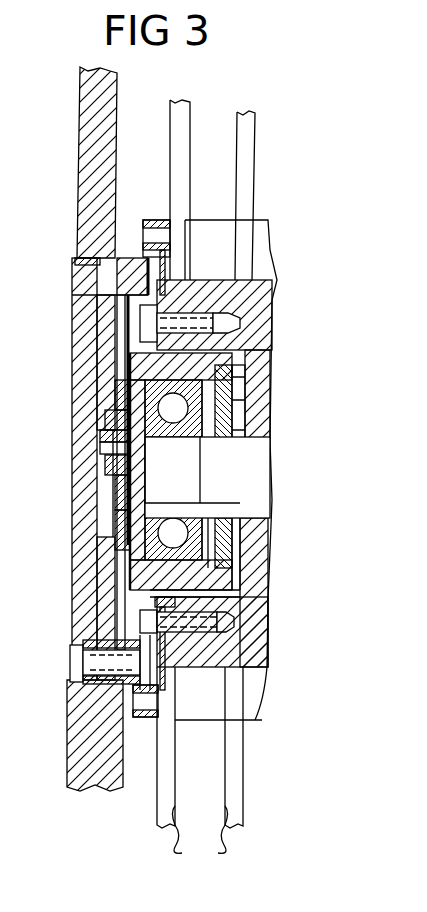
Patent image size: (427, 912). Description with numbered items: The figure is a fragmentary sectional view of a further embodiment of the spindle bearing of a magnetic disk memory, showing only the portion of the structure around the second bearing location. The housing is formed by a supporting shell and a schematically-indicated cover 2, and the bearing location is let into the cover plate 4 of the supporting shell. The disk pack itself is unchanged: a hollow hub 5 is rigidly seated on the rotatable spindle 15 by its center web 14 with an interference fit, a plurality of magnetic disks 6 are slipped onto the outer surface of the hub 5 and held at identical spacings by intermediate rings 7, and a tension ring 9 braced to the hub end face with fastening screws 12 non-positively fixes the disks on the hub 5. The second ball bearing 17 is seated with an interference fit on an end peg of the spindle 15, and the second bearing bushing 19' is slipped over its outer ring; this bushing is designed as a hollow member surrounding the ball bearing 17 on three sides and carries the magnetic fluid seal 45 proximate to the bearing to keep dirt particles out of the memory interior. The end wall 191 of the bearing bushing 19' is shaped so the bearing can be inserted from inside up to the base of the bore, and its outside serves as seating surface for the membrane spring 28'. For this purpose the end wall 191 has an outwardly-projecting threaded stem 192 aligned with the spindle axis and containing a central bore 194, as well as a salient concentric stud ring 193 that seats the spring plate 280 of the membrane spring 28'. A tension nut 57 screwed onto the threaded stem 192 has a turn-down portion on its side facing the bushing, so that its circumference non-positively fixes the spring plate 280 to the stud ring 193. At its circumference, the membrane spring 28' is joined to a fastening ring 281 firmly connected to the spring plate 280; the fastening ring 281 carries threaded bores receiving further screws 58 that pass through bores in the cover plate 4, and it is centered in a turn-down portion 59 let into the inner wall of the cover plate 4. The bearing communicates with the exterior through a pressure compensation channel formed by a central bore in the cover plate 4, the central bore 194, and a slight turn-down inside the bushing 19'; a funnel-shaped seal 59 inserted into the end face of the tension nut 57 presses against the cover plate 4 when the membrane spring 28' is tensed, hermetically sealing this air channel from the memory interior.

The cover 2 is at (88, 136).
The cover plate 4 is at (95, 747).
The hub 5 is at (255, 305).
The magnetic disks 6 is at (200, 836).
The intermediate rings 7 is at (205, 712).
The tension ring 9 is at (168, 268).
The fastening screws 12 is at (240, 331).
The center web 14 is at (255, 573).
The spindle 15 is at (262, 493).
The second ball bearing 17 is at (200, 440).
The magnetic fluid seal 45 is at (257, 380).
The tension nut 57 is at (105, 442).
The screws 58 is at (115, 420).
The turn-down portion / funnel-shaped seal 59 is at (105, 448).
The end wall 191 is at (118, 386).
The threaded stem 192 is at (108, 484).
The stud ring 193 is at (107, 537).
The central bore 194 is at (107, 478).
The spring plate 280 is at (125, 600).
The fastening ring 281 is at (130, 281).
The membrane spring 28' is at (72, 467).
The second bearing bushing 19' is at (82, 420).